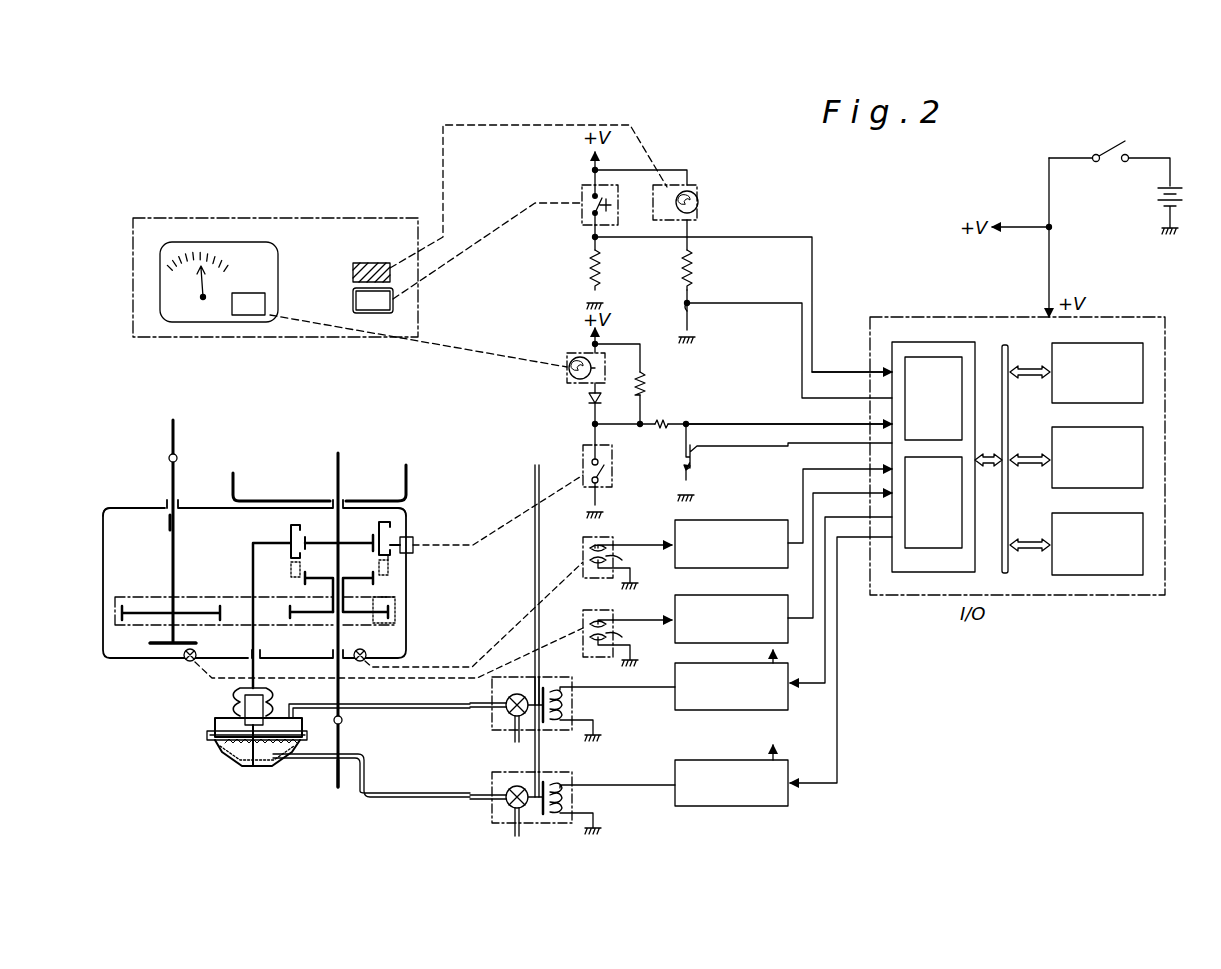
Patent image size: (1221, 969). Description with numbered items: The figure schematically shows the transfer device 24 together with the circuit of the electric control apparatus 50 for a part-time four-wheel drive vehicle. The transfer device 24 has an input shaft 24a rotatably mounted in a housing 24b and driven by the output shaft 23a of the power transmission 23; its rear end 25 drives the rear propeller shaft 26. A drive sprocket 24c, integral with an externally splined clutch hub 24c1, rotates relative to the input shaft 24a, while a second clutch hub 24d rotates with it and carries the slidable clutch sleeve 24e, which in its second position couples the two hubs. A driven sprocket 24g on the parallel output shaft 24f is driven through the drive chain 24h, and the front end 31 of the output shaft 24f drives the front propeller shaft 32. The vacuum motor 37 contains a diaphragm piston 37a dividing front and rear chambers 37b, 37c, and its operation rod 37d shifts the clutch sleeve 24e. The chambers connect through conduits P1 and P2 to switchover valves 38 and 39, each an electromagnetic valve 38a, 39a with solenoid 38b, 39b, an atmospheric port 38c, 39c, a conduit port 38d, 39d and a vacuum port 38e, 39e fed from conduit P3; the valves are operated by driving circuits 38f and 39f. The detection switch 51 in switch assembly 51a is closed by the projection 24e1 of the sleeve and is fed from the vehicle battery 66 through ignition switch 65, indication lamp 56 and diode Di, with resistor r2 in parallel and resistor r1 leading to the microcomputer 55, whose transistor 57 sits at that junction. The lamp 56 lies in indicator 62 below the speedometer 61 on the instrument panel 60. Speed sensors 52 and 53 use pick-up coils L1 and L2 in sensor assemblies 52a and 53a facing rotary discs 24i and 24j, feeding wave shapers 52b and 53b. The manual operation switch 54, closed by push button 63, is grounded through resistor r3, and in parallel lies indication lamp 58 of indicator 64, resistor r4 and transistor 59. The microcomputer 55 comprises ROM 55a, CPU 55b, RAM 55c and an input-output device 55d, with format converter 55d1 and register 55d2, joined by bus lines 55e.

The power transmission 23 is at (406, 473).
The output shaft of power transmission 23a is at (340, 470).
The transfer device 24 is at (114, 672).
The input shaft 24a is at (294, 530).
The housing 24b is at (107, 508).
The drive sprocket 24c is at (375, 614).
The externally splined clutch hub 24c1 is at (395, 604).
The externally splined clutch hub 24d is at (360, 542).
The clutch sleeve 24e is at (392, 556).
The projection of clutch sleeve 24e1 is at (391, 524).
The output shaft 24f is at (170, 526).
The driven sprocket 24g is at (128, 610).
The drive chain 24h is at (158, 594).
The rotary disc 24i is at (330, 627).
The rotary disc 24j is at (165, 642).
The rear end of input shaft 25 is at (342, 724).
The rear propeller shaft 26 is at (336, 778).
The front end of output shaft 31 is at (177, 459).
The front propeller shaft 32 is at (175, 433).
The vacuum motor 37 is at (220, 796).
The diaphragm piston 37a is at (223, 754).
The front chamber 37b is at (212, 726).
The rear chamber 37c is at (262, 768).
The operation rod 37d is at (251, 548).
The switchover valve 38 is at (572, 683).
The electromagnetic valve 38a is at (496, 719).
The solenoid 38b is at (565, 710).
The port 38c is at (516, 742).
The port 38d is at (492, 702).
The port 38e is at (538, 680).
The driving circuit 38f is at (702, 710).
The switchover valve 39 is at (566, 823).
The electromagnetic valve 39a is at (496, 812).
The solenoid 39b is at (573, 799).
The port 39c is at (517, 832).
The port 39d is at (488, 803).
The port 39e is at (538, 774).
The driving circuit 39f is at (696, 806).
The electric control apparatus 50 is at (944, 724).
The detection switch 51 is at (583, 465).
The switch assembly 51a is at (413, 550).
The rotational speed sensor 52 is at (583, 548).
The sensor assembly 52a is at (360, 662).
The wave shaper 52b is at (766, 521).
The rotational speed sensor 53 is at (583, 625).
The sensor assembly 53a is at (188, 662).
The wave shaper 53b is at (750, 596).
The manual operation switch 54 is at (582, 195).
The microcomputer 55 is at (1004, 600).
The ROM 55a is at (1143, 373).
The CPU 55b is at (1143, 449).
The RAM 55c is at (1143, 539).
The input-output device 55d is at (932, 572).
The format converter 55d1 is at (906, 360).
The register 55d2 is at (905, 540).
The bus lines 55e is at (1007, 570).
The indication lamp 56 is at (570, 358).
The switching transistor 57 is at (693, 470).
The indication lamp 58 is at (697, 198).
The switching transistor 59 is at (689, 308).
The instrument panel 60 is at (216, 218).
The speedometer 61 is at (256, 242).
The indicator 62 is at (248, 315).
The push button 63 is at (393, 300).
The indicator 64 is at (372, 263).
The ignition switch 65 is at (1109, 150).
The vehicle battery 66 is at (1176, 196).
The diode Di is at (589, 398).
The pick-up coil L1 is at (616, 566).
The pick-up coil L2 is at (614, 639).
The conduit P1 is at (416, 712).
The conduit P2 is at (414, 804).
The conduit P3 is at (535, 576).
The resistor r1 is at (663, 429).
The resistor r2 is at (644, 379).
The resistor r3 is at (597, 270).
The resistor r4 is at (693, 268).